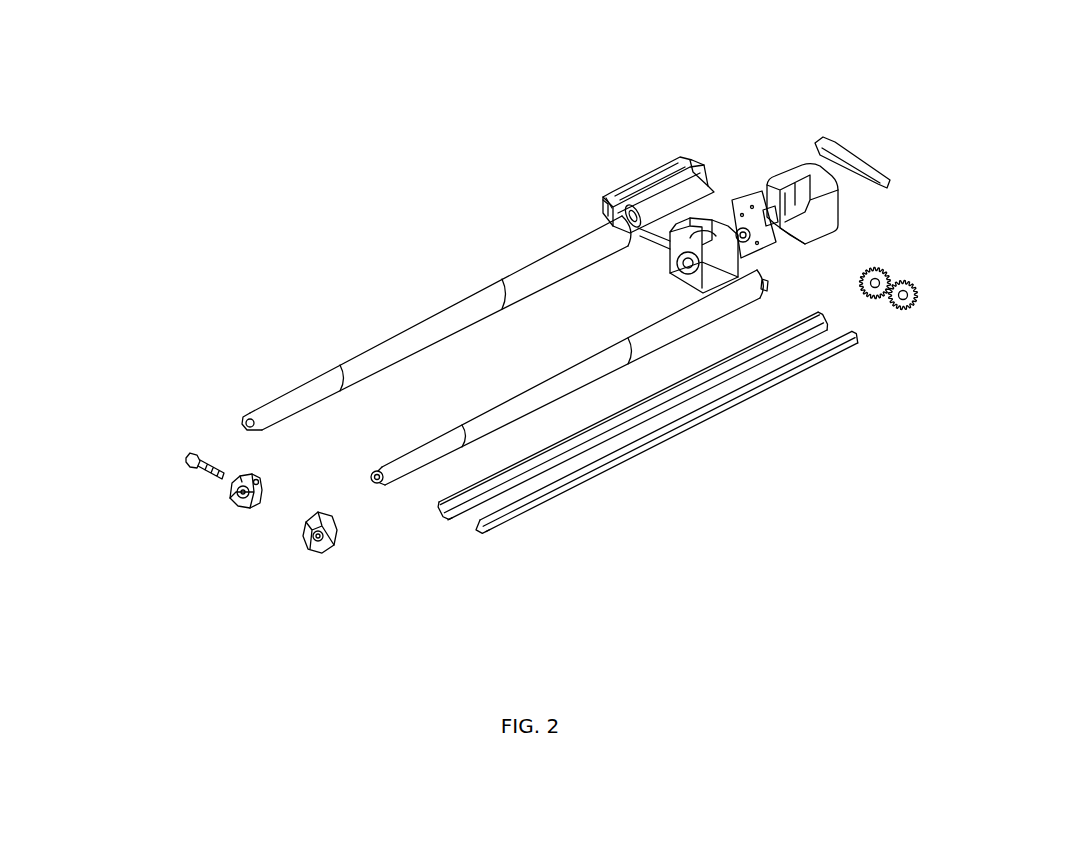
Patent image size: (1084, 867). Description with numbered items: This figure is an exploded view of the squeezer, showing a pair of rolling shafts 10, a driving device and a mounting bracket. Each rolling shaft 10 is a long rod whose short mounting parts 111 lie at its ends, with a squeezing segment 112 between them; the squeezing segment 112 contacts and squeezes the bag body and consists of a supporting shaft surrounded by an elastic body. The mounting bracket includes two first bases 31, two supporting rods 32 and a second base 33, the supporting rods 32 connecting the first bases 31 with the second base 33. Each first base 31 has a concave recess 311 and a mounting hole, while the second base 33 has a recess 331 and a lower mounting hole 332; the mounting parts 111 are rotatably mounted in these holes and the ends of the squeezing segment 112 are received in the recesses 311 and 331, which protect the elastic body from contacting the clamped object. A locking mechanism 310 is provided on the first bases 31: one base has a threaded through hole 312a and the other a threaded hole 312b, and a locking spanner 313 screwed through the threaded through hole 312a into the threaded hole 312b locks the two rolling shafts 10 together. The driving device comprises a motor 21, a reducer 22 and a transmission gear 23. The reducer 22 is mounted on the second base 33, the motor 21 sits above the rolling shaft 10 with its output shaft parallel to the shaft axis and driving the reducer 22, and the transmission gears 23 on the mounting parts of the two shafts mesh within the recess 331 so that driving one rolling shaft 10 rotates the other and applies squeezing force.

The rolling shaft 10 is at (380, 313).
The motor 21 is at (632, 173).
The reducer 22 is at (708, 228).
The transmission gear 23 is at (892, 322).
The first base 31 is at (275, 534).
The supporting rod 32 is at (641, 452).
The second base 33 is at (555, 138).
The mounting part 111 is at (377, 486).
The squeezing segment 112 is at (510, 407).
The locking mechanism 310 is at (225, 476).
The concave recess 311 is at (256, 508).
The threaded through hole 312a is at (262, 482).
The threaded hole 312b is at (302, 517).
The locking spanner 313 is at (194, 455).
The recess 331 is at (710, 290).
The lower mounting hole 332 is at (675, 244).